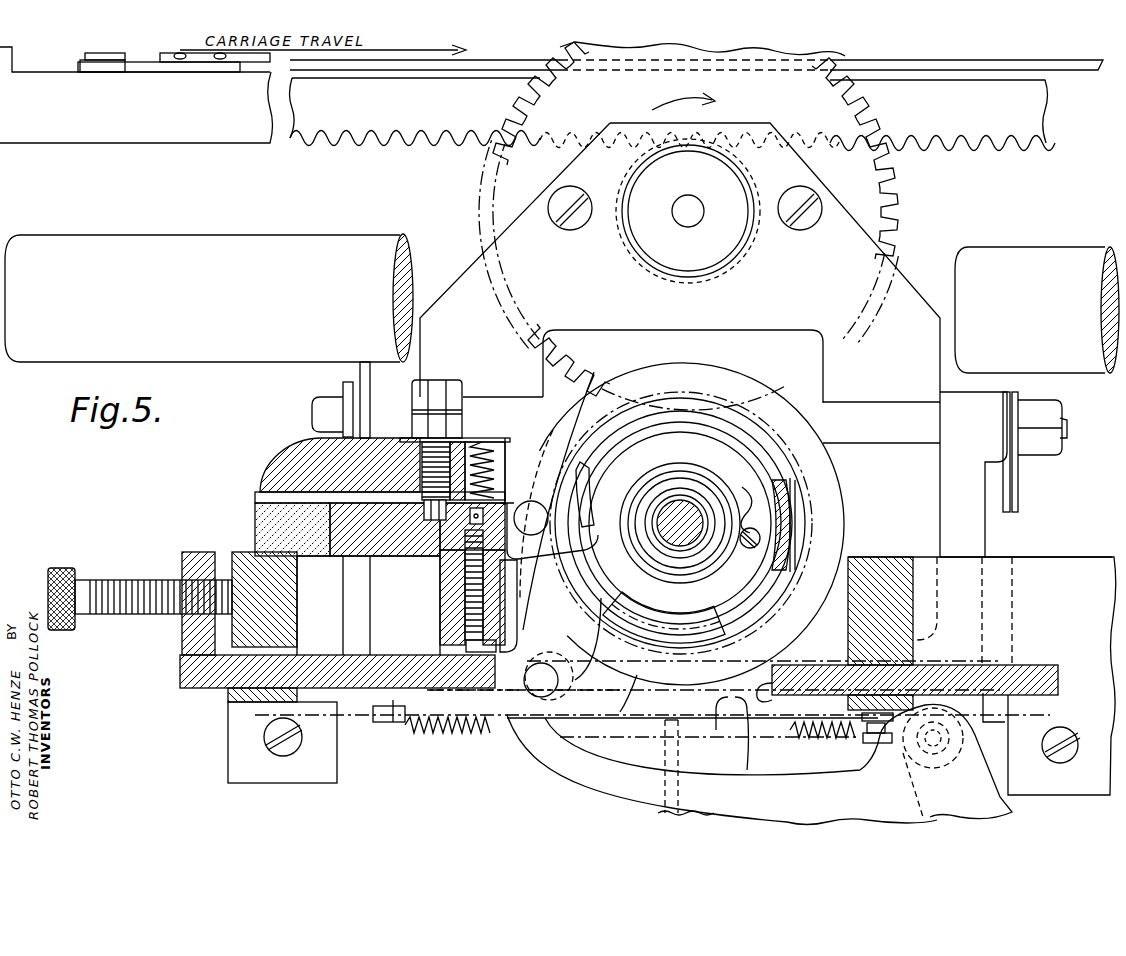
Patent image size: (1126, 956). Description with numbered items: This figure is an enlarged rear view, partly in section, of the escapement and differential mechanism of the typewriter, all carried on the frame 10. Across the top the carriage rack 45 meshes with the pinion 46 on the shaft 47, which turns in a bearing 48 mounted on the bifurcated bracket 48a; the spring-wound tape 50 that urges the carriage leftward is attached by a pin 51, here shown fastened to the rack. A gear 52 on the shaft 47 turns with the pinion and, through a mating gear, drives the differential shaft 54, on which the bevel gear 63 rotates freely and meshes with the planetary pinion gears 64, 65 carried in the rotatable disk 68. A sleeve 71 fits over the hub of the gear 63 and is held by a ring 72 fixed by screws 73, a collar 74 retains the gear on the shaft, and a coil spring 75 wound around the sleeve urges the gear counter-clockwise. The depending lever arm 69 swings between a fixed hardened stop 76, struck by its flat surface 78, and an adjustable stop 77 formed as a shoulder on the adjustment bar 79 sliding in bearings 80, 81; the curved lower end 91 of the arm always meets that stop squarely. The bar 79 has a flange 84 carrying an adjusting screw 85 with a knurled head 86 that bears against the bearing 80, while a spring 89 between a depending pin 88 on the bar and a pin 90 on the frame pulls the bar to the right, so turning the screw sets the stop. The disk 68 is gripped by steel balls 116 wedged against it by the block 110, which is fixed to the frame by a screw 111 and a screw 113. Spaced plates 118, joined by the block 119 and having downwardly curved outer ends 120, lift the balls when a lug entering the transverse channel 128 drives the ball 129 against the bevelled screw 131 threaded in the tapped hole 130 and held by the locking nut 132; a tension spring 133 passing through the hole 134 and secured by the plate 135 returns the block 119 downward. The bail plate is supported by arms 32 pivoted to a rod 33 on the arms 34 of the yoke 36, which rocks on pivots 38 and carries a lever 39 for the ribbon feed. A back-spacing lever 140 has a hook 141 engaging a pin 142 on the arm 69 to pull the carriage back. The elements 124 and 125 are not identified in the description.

The frame 10 is at (1050, 787).
The arms 32 is at (1012, 515).
The rod 33 is at (918, 440).
The arms 34 is at (948, 531).
The yoke member 36 is at (748, 755).
The pivots 38 is at (990, 712).
The lever 39 is at (658, 812).
The rack 45 is at (1010, 143).
The pinion 46 is at (751, 238).
The shaft 47 is at (679, 216).
The bearing 48 is at (668, 280).
The bifurcated bracket 48a is at (478, 248).
The ribbon or tape 50 is at (985, 69).
The pin 51 is at (100, 53).
The gear 52 is at (872, 198).
The shaft 54 is at (677, 500).
The second bevel gear 63 is at (745, 456).
The planetary pinion gear 64 is at (779, 500).
The planetary pinion gear 65 is at (596, 495).
The disk 68 is at (838, 497).
The lever arm 69 is at (545, 617).
The sleeve 71 is at (648, 556).
The ring 72 is at (712, 620).
The screws 73 is at (761, 538).
The collar 74 is at (700, 488).
The coil spring 75 is at (748, 500).
The stop 76 is at (470, 612).
The stop 77 is at (770, 698).
The flat surface 78 is at (600, 735).
The adjustment bar 79 is at (940, 665).
The bearing 80 is at (250, 710).
The bearing 81 is at (836, 743).
The flange 84 is at (182, 630).
The adjusting screw 85 is at (130, 582).
The knurled head 86 is at (60, 568).
The depending pin 88 is at (414, 735).
The spring 89 is at (790, 740).
The pin 90 is at (873, 742).
The curved lower end 91 is at (605, 650).
The block 110 is at (343, 533).
The screw 111 is at (255, 530).
The screw 113 is at (512, 628).
The steel balls 116 is at (579, 440).
The spaced plates 118 is at (292, 440).
The block 119 is at (367, 362).
The outer ends 120 is at (260, 493).
The bracket 124 is at (556, 548).
The roller 125 is at (548, 516).
The transverse channel 128 is at (392, 540).
The ball 129 is at (433, 522).
The tapped hole 130 is at (422, 470).
The screw 131 is at (436, 379).
The locking nut 132 is at (412, 380).
The tension spring 133 is at (506, 478).
The hole 134 is at (430, 438).
The plate 135 is at (420, 410).
The lever 140 is at (603, 768).
The hook 141 is at (560, 680).
The pin 142 is at (572, 700).